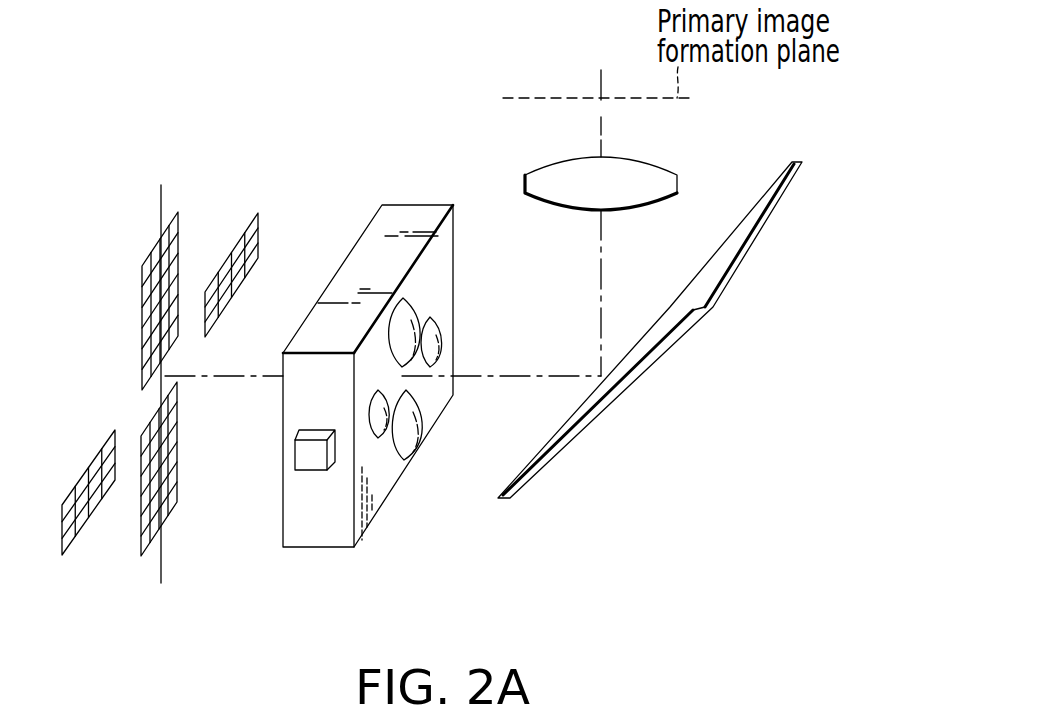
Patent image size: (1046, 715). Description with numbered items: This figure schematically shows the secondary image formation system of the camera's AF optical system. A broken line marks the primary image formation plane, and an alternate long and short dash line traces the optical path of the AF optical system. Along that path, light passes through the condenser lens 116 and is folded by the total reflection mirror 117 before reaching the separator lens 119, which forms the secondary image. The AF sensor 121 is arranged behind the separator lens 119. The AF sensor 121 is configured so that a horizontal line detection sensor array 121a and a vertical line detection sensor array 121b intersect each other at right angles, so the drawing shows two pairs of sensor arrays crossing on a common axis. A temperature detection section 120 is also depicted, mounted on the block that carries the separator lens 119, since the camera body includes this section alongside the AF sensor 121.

The condenser lens 116 is at (548, 163).
The total reflection mirror 117 is at (774, 207).
The separator lens 119 is at (418, 423).
The temperature detection section 120 is at (312, 472).
The AF sensor 121 is at (190, 190).
The horizontal line detection sensor array 121a is at (141, 302).
The vertical line detection sensor array 121b is at (258, 230).